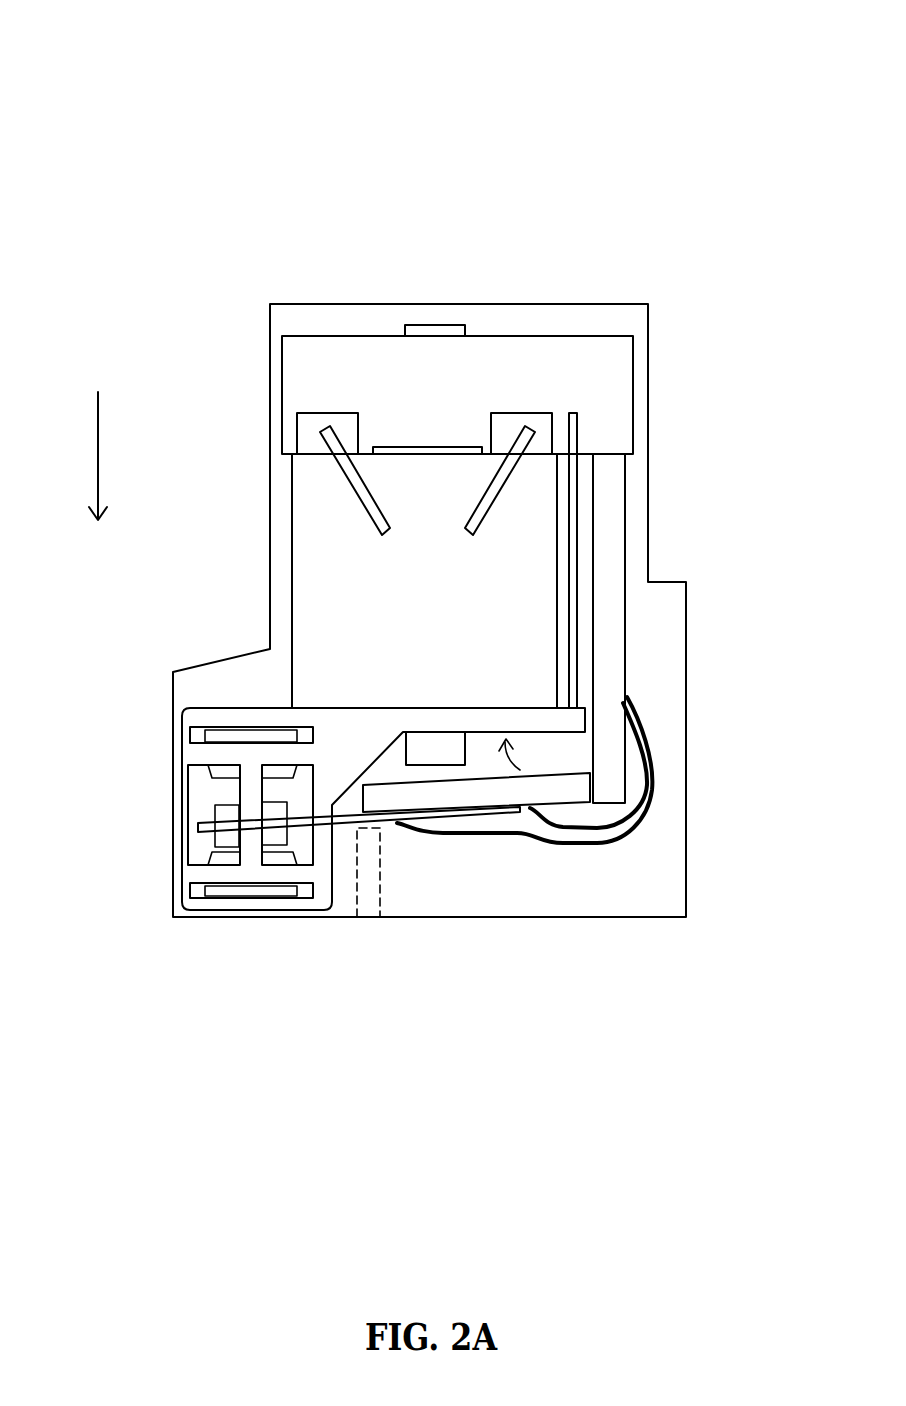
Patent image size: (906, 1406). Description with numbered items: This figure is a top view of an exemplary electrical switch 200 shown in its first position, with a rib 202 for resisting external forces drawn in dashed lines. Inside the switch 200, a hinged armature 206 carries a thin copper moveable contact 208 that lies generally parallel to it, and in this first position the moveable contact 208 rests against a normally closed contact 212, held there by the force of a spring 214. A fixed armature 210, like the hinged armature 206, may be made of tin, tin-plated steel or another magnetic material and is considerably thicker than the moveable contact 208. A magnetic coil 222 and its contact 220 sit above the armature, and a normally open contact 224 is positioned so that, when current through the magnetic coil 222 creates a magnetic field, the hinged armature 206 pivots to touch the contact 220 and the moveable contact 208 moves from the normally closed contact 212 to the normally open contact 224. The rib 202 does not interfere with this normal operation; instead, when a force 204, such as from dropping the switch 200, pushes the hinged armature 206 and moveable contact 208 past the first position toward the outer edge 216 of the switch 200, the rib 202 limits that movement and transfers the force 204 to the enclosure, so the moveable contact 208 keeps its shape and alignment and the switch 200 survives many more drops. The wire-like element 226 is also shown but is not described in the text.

The electrical switch 200 is at (777, 80).
The rib 202 is at (370, 888).
The force 204 is at (98, 452).
The hinged armature 206 is at (502, 793).
The moveable contact 208 is at (513, 757).
The fixed armature 210 is at (612, 533).
The normally closed contact 212 is at (253, 888).
The spring 214 is at (618, 822).
The outer edge 216 is at (562, 917).
The contact 220 is at (435, 742).
The magnetic coil 222 is at (396, 483).
The normally open contact 224 is at (220, 738).
The inner cable 226 is at (655, 787).